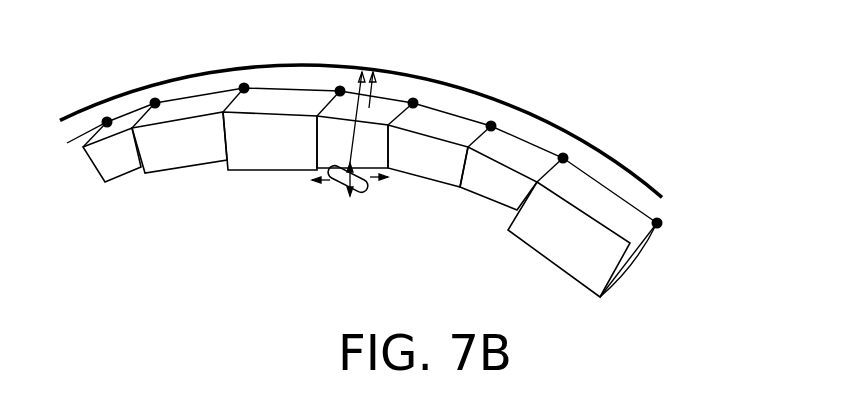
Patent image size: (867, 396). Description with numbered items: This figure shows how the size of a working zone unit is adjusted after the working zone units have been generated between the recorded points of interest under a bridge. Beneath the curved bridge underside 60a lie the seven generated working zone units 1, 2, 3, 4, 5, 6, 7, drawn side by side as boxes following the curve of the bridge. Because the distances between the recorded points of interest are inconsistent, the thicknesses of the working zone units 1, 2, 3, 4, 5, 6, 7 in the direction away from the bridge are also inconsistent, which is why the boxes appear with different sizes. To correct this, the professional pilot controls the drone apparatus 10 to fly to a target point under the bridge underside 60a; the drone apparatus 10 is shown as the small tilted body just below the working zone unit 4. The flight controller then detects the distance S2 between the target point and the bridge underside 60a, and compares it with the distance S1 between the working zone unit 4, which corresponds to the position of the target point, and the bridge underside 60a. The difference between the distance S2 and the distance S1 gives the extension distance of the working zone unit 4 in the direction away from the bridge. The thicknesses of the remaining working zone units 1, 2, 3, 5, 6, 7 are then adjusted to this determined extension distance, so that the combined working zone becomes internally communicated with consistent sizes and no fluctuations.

The working zone unit 1 is at (112, 155).
The working zone unit 2 is at (179, 142).
The working zone unit 3 is at (270, 141).
The working zone unit 4 is at (352, 144).
The working zone unit 5 is at (428, 156).
The working zone unit 6 is at (498, 178).
The working zone unit 7 is at (569, 239).
The drone apparatus 10 is at (367, 188).
The distance S1 is at (381, 87).
The distance S2 is at (361, 85).
The bridge underside 60a is at (622, 165).